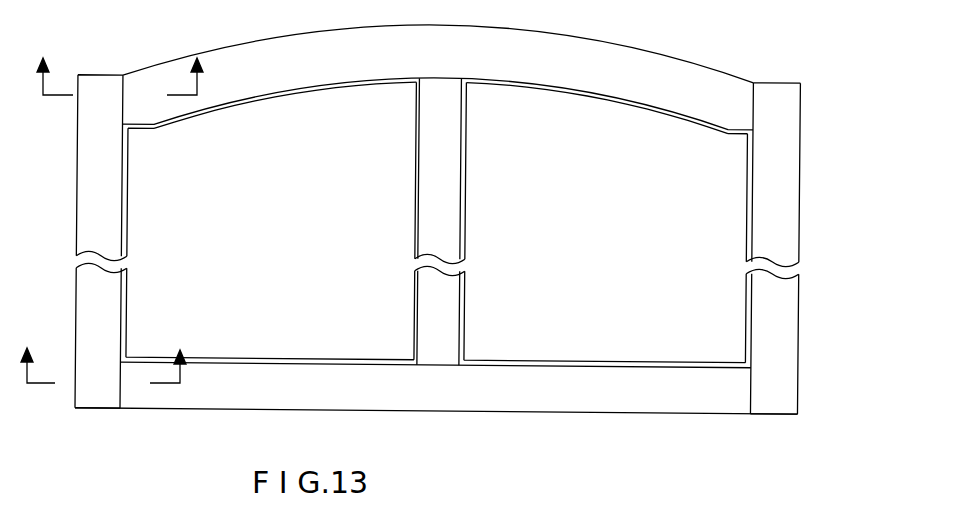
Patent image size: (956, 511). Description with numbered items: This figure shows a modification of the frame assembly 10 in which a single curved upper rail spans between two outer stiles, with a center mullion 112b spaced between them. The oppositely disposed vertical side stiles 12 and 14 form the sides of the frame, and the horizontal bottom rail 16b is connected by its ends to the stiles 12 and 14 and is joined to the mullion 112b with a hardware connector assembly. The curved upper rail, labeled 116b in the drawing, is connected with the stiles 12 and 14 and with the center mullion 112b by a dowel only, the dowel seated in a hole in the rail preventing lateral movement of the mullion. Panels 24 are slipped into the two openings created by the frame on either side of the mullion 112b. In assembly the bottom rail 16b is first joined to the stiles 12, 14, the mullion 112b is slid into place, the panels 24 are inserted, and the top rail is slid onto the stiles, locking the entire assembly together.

The frame assembly 10 is at (112, 203).
The side stile 12 is at (77, 188).
The side stile 14 is at (800, 226).
The bottom rail 16b is at (638, 414).
The panel 24 is at (288, 242).
The center mullion 112b is at (466, 224).
The arched top rail 116b is at (585, 57).